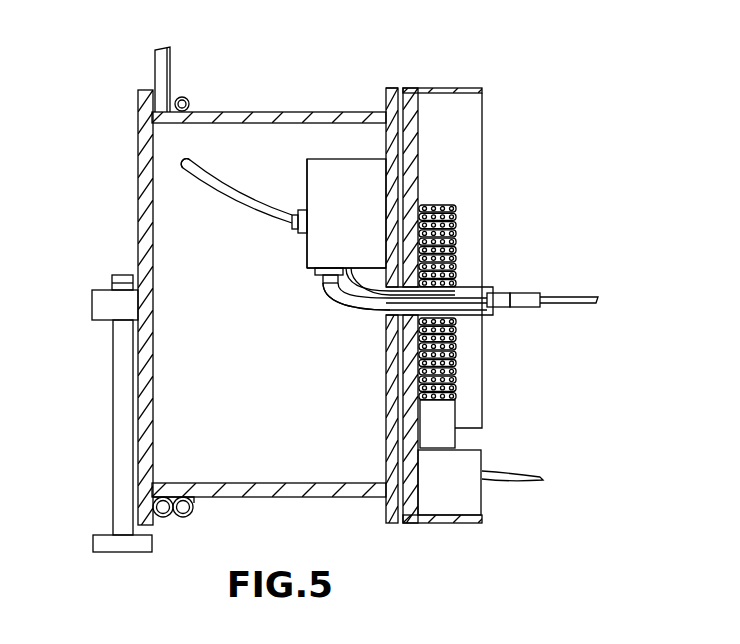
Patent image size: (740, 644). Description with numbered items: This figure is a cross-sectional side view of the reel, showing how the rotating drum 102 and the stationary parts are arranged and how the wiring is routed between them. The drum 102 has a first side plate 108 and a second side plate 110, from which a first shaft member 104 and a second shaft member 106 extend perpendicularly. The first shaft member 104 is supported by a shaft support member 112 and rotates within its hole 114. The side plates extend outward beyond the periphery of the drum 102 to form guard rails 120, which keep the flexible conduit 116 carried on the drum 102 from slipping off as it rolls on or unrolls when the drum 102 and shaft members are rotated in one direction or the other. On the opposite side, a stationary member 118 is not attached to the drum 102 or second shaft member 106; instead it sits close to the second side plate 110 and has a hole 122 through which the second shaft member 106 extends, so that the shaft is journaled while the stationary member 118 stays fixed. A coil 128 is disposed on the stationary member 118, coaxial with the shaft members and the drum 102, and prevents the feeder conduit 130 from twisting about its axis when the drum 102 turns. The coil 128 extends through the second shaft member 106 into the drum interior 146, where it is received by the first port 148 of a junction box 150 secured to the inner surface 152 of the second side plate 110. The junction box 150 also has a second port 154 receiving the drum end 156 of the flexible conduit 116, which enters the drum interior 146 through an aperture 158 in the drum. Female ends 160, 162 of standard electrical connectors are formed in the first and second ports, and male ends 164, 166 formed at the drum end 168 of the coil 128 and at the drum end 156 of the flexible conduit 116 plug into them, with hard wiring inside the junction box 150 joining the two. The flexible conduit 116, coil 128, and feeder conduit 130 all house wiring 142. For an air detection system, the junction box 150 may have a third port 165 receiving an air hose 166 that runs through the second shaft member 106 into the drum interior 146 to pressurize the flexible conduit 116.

The drum 102 is at (372, 497).
The first shaft member 104 is at (110, 300).
The second shaft member 106 is at (500, 292).
The first side plate 108 is at (153, 355).
The second side plate 110 is at (386, 440).
The shaft support member 112 is at (135, 545).
The hole 114 is at (117, 330).
The flexible conduit 116 is at (190, 100).
The stationary member 118 is at (477, 84).
The guard rails 120 is at (158, 100).
The hole 122 is at (490, 312).
The coil 128 is at (456, 378).
The feeder conduit 130 is at (510, 478).
The wiring 142 is at (422, 205).
The drum interior 146 is at (285, 408).
The first port 148 is at (320, 242).
The junction box 150 is at (308, 159).
The inner surface 152 is at (385, 133).
The second port 154 is at (318, 208).
The drum end 156 is at (220, 190).
The aperture 158 is at (182, 163).
The female end 160 is at (320, 272).
The female end 162 is at (299, 237).
The male end 164 is at (317, 278).
The third port 165 is at (354, 276).
The male end 166 is at (590, 304).
The drum end 168 is at (356, 296).